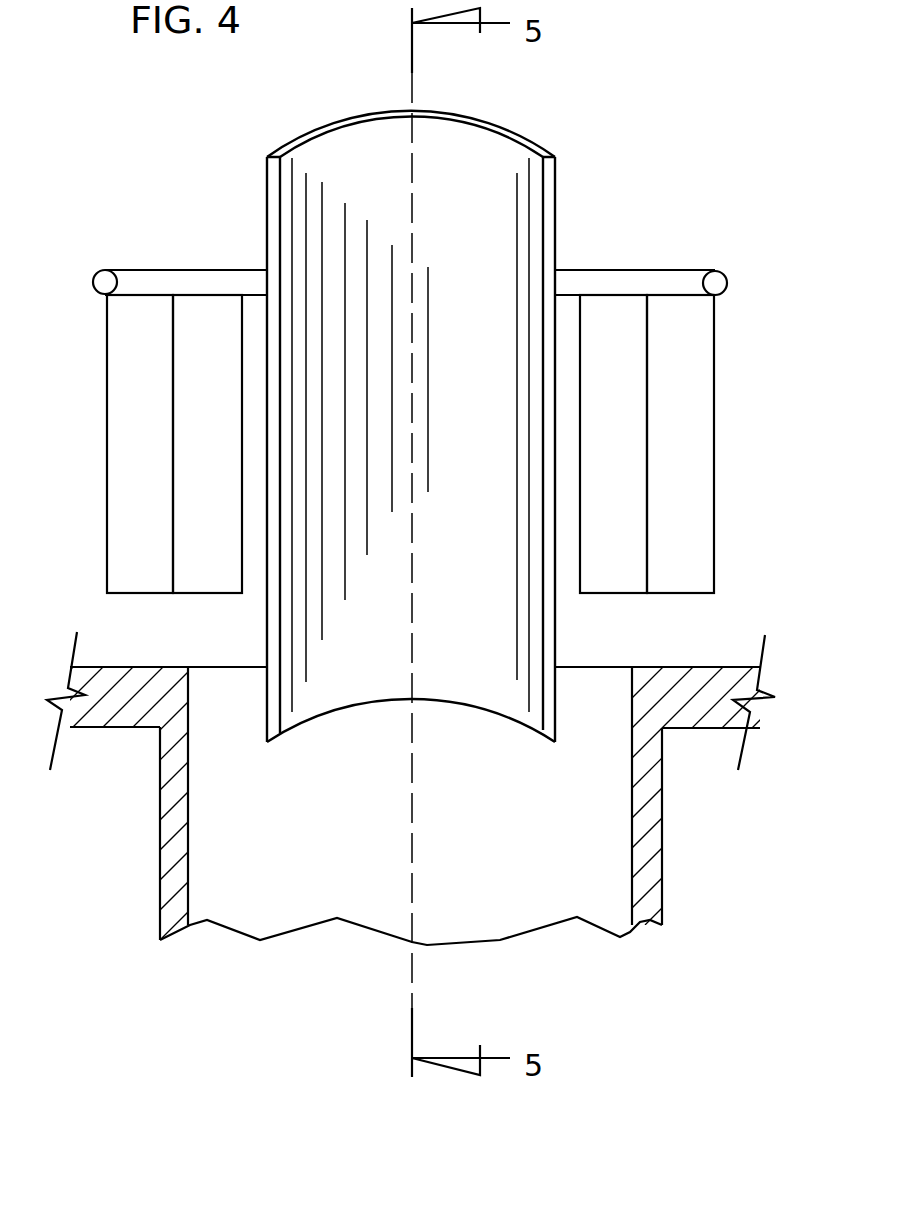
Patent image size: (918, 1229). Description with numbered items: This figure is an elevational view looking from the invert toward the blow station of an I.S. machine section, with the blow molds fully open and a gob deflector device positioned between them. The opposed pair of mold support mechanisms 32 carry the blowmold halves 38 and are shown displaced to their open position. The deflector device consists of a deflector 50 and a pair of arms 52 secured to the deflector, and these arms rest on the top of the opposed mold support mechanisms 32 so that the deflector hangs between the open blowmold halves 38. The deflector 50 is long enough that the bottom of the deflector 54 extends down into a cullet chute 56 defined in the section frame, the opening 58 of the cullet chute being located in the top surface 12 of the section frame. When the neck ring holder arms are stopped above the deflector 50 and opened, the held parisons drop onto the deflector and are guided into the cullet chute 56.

The top surface 12 is at (712, 678).
The mold support mechanisms 32 is at (140, 445).
The blowmold halves 38 is at (223, 436).
The deflector 50 is at (470, 225).
The arms 52 is at (163, 281).
The bottom of the deflector 54 is at (348, 705).
The cullet chute 56 is at (640, 794).
The opening 58 is at (220, 666).